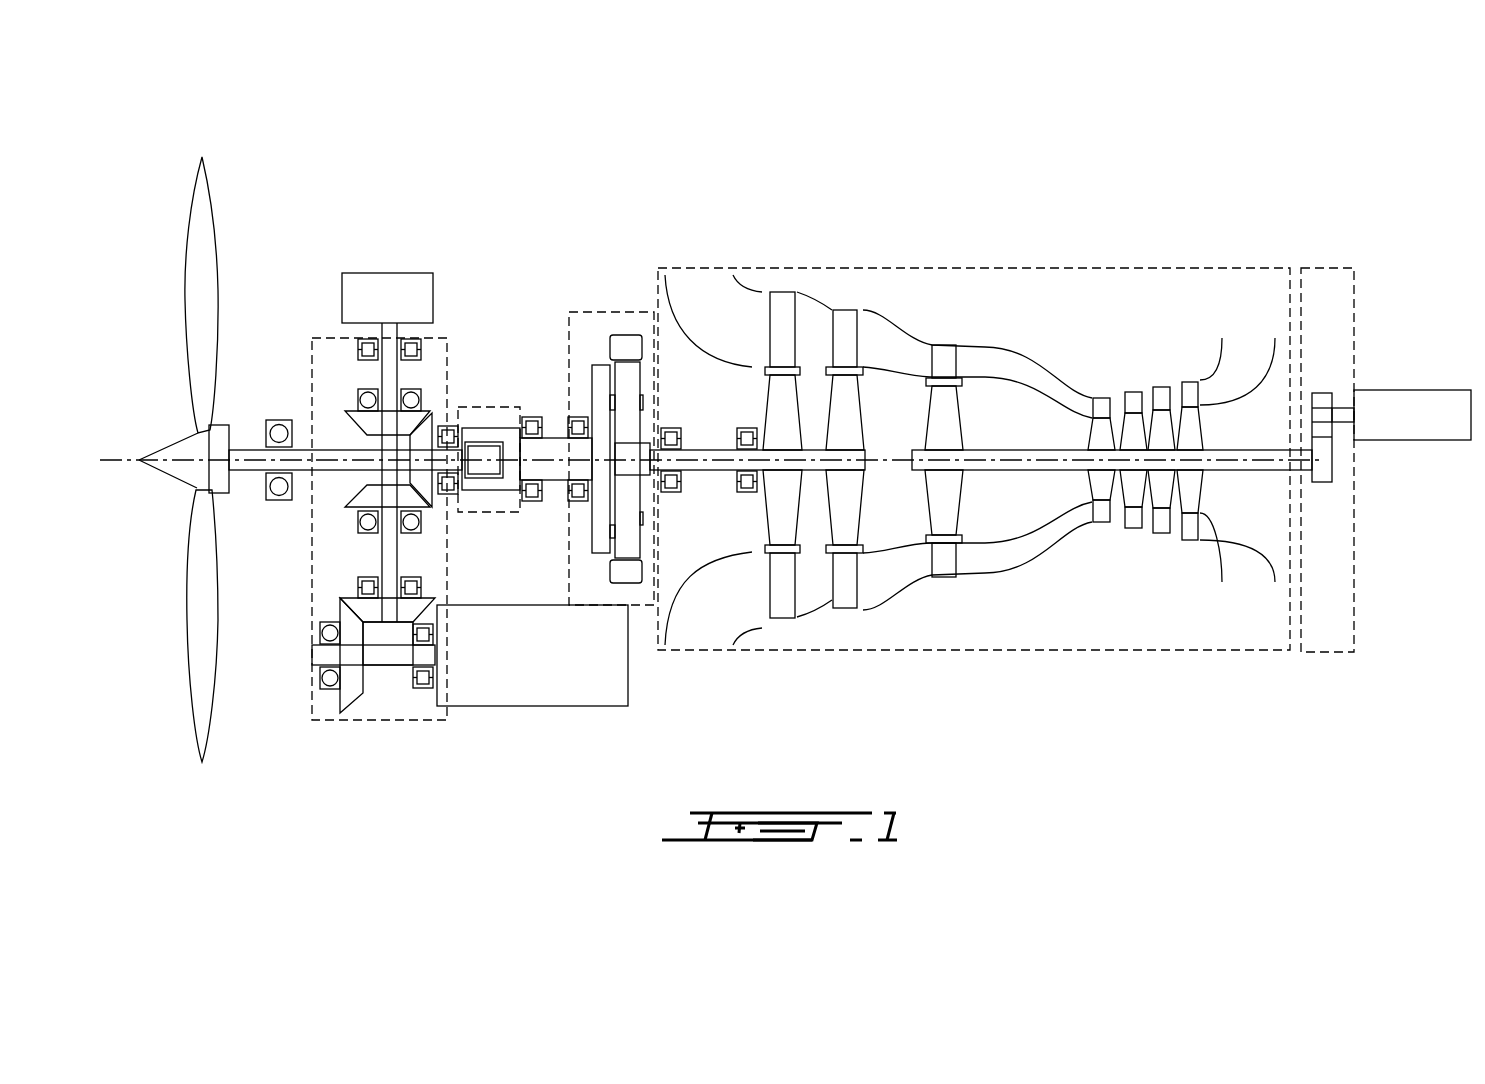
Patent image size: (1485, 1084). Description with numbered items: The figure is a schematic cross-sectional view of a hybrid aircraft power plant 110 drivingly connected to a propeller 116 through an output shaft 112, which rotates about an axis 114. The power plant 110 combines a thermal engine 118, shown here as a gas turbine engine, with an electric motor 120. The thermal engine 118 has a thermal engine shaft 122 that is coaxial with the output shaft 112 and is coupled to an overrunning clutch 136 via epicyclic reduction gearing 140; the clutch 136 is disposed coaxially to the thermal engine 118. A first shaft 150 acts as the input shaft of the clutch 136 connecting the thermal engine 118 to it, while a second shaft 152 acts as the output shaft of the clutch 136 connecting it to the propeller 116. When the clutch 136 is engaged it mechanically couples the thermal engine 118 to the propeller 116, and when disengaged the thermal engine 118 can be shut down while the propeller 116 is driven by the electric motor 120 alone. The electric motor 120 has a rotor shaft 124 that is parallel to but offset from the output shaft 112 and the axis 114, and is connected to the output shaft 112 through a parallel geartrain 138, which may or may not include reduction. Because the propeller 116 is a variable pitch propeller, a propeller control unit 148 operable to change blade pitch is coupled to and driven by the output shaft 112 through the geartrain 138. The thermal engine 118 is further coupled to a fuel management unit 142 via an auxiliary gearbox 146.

The power plant 110 is at (373, 104).
The output shaft 112 is at (247, 448).
The axis 114 is at (122, 458).
The propeller 116 is at (203, 156).
The thermal engine 118 is at (1088, 267).
The electric motor 120 is at (531, 708).
The thermal engine shaft 122 is at (703, 452).
The rotor shaft 124 is at (390, 667).
The clutch 136 is at (492, 406).
The geartrain 138 is at (320, 337).
The reduction gearing 140 is at (612, 311).
The fuel management unit 142 is at (1412, 390).
The auxiliary gearbox 146 is at (1328, 267).
The propeller control unit 148 is at (384, 290).
The first shaft 150 is at (557, 437).
The second shaft 152 is at (432, 413).